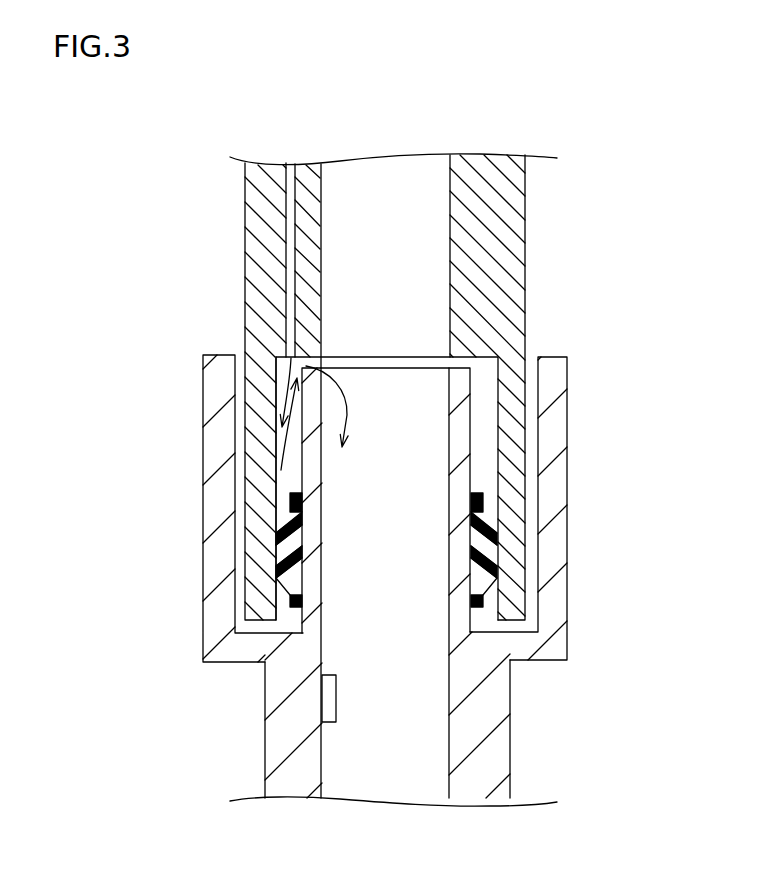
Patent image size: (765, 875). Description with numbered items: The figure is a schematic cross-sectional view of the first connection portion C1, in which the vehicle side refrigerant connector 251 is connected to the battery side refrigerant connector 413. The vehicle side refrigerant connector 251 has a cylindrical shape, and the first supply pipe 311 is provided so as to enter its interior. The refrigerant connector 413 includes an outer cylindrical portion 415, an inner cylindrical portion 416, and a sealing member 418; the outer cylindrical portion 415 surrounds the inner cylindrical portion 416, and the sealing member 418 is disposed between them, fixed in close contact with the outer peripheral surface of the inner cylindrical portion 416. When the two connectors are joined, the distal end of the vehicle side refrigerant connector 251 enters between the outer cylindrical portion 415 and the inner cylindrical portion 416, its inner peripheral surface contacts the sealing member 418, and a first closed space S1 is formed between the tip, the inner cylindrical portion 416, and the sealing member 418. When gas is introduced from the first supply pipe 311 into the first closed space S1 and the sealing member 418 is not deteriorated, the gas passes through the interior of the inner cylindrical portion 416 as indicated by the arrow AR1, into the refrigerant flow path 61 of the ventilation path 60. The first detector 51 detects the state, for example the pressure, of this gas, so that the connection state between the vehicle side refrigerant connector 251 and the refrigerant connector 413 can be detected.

The vehicle side refrigerant connector 251 is at (525, 239).
The first supply pipe 311 is at (287, 228).
The arrow AR1 is at (350, 410).
The first connection portion C1 is at (586, 319).
The first closed space S1 is at (488, 424).
The refrigerant connector 413 is at (610, 540).
The outer cylindrical portion 415 is at (567, 500).
The inner cylindrical portion 416 is at (472, 460).
The sealing member 418 is at (492, 572).
The first detector 51 is at (336, 693).
The refrigerant flow path 61 is at (510, 772).
The ventilation path 60 is at (417, 587).